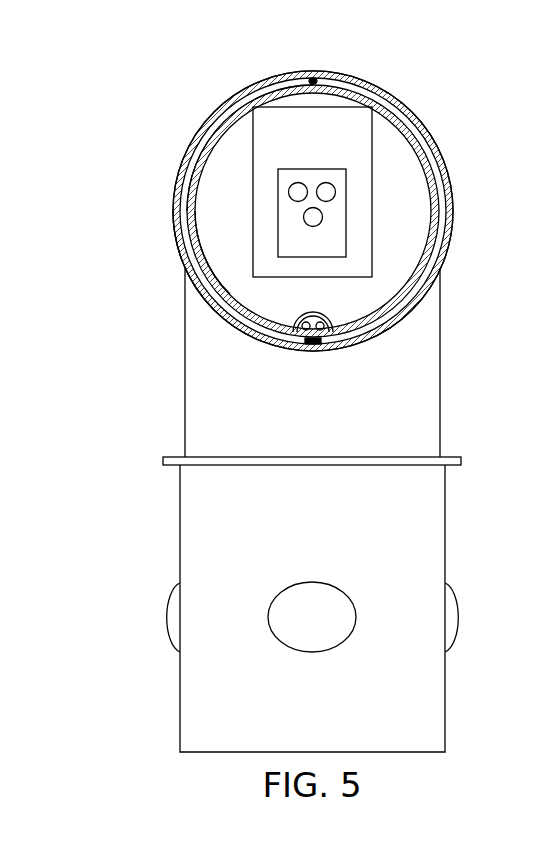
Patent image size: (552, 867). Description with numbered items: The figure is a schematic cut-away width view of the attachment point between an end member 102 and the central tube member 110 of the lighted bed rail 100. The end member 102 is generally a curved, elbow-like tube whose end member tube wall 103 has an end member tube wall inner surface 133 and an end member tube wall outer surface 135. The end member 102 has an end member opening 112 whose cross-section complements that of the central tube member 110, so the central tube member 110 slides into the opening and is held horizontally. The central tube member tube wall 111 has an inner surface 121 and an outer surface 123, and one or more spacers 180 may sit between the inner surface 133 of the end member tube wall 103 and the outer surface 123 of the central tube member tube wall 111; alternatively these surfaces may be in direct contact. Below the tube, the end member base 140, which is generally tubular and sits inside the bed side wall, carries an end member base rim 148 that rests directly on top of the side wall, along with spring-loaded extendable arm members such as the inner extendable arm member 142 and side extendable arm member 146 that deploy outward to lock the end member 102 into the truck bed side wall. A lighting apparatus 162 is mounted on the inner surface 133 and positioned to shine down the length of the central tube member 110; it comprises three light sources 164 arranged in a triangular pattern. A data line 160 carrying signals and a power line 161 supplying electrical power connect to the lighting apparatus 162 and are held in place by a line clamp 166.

The lighted bed rail 100 is at (456, 140).
The end member 102 is at (195, 138).
The end member tube wall 103 is at (441, 370).
The central tube member 110 is at (243, 97).
The central tube member tube wall 111 is at (440, 188).
The end member opening 112 is at (392, 246).
The inner surface of the tube wall 121 is at (188, 172).
The outer surface of the central tube member tube wall 123 is at (185, 195).
The end member tube wall inner surface 133 is at (187, 262).
The end member tube wall outer surface 135 is at (167, 207).
The end member base 140 is at (446, 508).
The inner extendable arm member 142 is at (313, 582).
The side extendable arm member 146 is at (170, 585).
The end member base rim 148 is at (396, 466).
The data line 160 is at (305, 331).
The power line 161 is at (321, 331).
The lighting apparatus 162 is at (348, 212).
The light sources 164 is at (297, 182).
The line clamp 166 is at (294, 316).
The spacers 180 is at (313, 346).